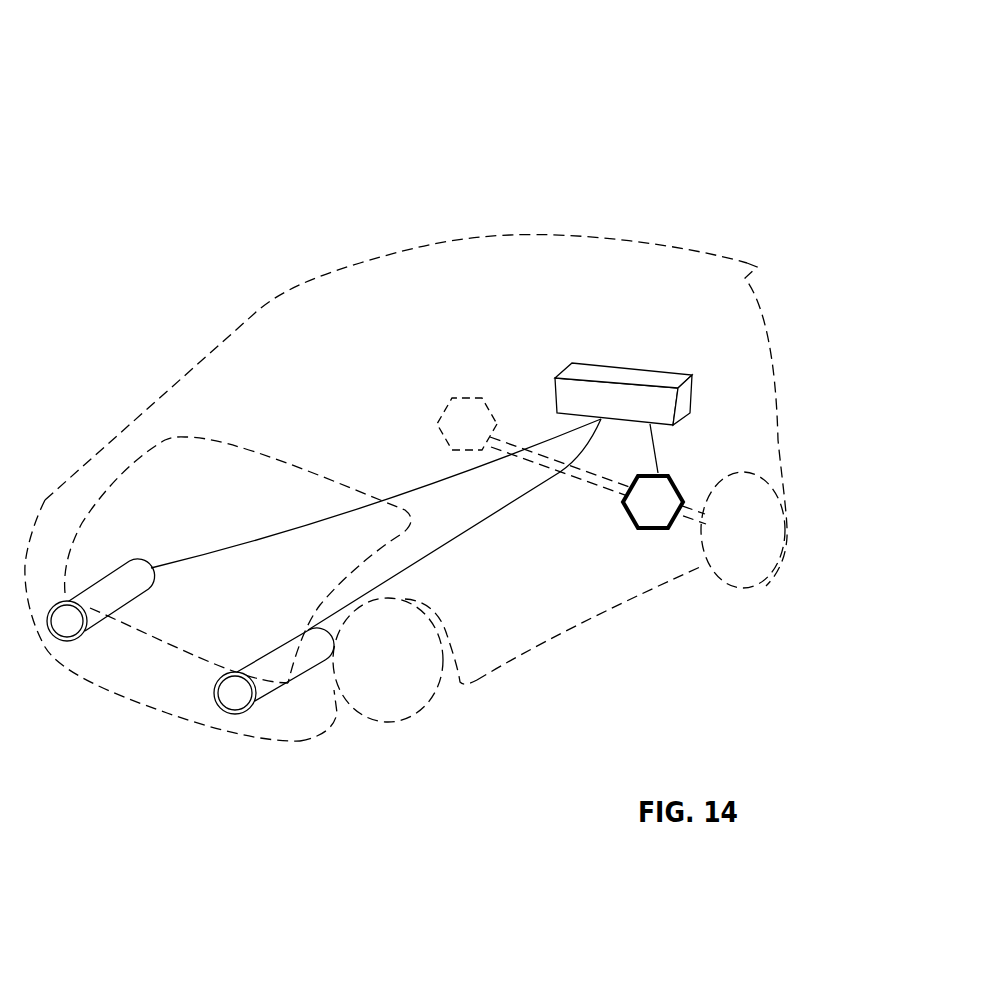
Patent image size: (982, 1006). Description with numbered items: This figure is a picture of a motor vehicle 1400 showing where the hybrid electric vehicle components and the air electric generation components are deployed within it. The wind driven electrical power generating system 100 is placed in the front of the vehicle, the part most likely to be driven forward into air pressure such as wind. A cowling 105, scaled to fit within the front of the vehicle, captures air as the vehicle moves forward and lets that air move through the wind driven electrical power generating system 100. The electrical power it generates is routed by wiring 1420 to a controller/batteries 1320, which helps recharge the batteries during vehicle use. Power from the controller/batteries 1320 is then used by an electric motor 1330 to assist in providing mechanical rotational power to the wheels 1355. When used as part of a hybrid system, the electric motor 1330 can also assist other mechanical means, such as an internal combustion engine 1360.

The vehicle sensor system 1400 is at (160, 125).
The wind driven electrical power generating system 100 is at (120, 578).
The cowling 105 is at (45, 643).
The wiring 1420 is at (530, 453).
The internal combustion engine 1360 is at (455, 397).
The controller/batteries 1320 is at (597, 363).
The electric motor 1330 is at (673, 473).
The wheels 1355 is at (750, 573).